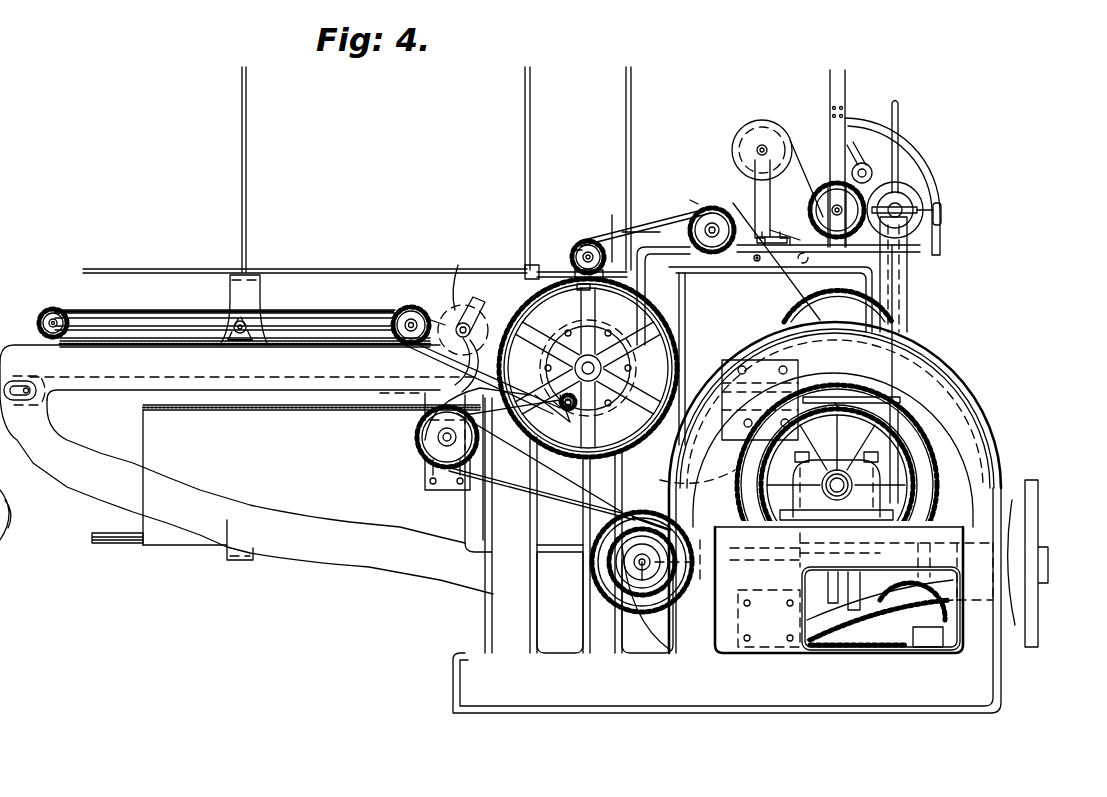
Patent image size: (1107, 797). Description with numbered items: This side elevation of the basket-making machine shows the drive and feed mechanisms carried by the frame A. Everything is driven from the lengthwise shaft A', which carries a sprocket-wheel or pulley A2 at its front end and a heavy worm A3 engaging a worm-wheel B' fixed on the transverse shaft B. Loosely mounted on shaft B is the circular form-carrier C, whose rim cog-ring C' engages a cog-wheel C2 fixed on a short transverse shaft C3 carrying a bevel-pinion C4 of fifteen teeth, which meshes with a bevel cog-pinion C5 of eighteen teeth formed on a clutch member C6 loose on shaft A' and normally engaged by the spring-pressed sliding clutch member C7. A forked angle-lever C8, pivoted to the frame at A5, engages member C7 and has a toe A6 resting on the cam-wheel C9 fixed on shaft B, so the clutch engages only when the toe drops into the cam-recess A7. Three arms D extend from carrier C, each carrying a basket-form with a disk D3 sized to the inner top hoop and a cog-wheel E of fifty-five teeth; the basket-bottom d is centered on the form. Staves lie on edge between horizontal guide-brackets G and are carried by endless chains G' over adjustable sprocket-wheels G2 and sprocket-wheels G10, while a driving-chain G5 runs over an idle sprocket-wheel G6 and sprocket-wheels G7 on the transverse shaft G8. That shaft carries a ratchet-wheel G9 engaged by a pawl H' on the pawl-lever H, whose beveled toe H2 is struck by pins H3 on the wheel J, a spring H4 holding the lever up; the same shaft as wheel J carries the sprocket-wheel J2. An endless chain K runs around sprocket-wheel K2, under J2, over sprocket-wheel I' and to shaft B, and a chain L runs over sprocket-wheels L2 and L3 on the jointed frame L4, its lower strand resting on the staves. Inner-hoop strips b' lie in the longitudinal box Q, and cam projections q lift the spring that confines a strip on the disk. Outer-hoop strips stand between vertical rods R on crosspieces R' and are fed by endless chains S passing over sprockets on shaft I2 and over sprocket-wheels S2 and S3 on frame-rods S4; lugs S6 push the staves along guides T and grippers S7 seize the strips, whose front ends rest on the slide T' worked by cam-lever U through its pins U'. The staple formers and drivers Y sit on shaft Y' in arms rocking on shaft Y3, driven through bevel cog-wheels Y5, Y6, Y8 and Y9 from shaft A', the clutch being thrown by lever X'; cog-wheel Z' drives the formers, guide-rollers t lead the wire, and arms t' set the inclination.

The vertical rods R is at (448, 169).
The crosspieces R' is at (355, 307).
The endless chain L is at (325, 310).
The sprocket-wheel L2 is at (238, 343).
The sprocket-wheel L3 is at (51, 308).
The jointed frame L4 is at (138, 318).
The horizontal guide-brackets G is at (240, 372).
The endless chains G' is at (311, 475).
The adjustable sprocket-wheels G2 is at (38, 388).
The endless driving-chain G5 is at (420, 367).
The idle sprocket-wheel G6 is at (411, 313).
The sprocket-wheels G7 is at (438, 305).
The transverse shaft G8 is at (472, 318).
The ratchet-wheel G9 is at (460, 262).
The sprocket-wheels G10 is at (559, 414).
The longitudinal box Q is at (246, 478).
The wooden strips b' is at (172, 535).
The pawl-lever H is at (541, 368).
The pawl H' is at (470, 333).
The beveled toe H2 is at (558, 471).
The pins H3 is at (602, 362).
The spring H4 is at (465, 388).
The endless chain K is at (617, 463).
The sprocket-wheel K2 is at (430, 462).
The wheel J is at (588, 368).
The sprocket-wheel J2 is at (603, 465).
The cam-lever U is at (576, 259).
The pins U' is at (576, 286).
The guides T is at (794, 285).
The slide T' is at (532, 261).
The endless chains S is at (643, 223).
The sprocket-wheel S2 is at (578, 236).
The sprocket-wheel S3 is at (787, 223).
The frame-rods S4 is at (614, 235).
The lugs S6 is at (682, 198).
The gripper S7 is at (642, 234).
The sprocket-wheel I' is at (712, 212).
The shaft I2 is at (663, 296).
The basket-bottom d is at (782, 121).
The cog-wheel Z' is at (778, 230).
The guide-rollers t is at (860, 162).
The arms t' is at (853, 158).
The lever X' is at (892, 184).
The staple formers and drivers Y is at (837, 217).
The shaft Y' is at (837, 207).
The shaft Y3 is at (900, 207).
The bevel cog-wheel Y5 is at (934, 227).
The bevel cog-wheel Y6 is at (915, 252).
The bevel cog-wheel Y8 is at (920, 543).
The bevel cog-wheel Y9 is at (912, 601).
The frame A is at (727, 554).
The shaft A' is at (1016, 571).
The sprocket-wheel A2 is at (1040, 488).
The worm A3 is at (850, 612).
The pivot A5 is at (747, 395).
The toe A6 is at (842, 397).
The cam-recess A7 is at (888, 430).
The shaft B is at (837, 485).
The worm-wheel B' is at (836, 475).
The circular form-carrier C is at (849, 608).
The cog-ring C' is at (857, 667).
The cog-wheel C2 is at (600, 560).
The short transverse shaft C3 is at (642, 573).
The bevel-pinion C4 is at (618, 580).
The bevel cog-pinion C5 is at (658, 597).
The clutch member C6 is at (682, 574).
The clutch member C7 is at (697, 500).
The forked angle-lever C8 is at (808, 395).
The cam-wheel C9 is at (925, 475).
The arms D is at (713, 322).
The disk D3 is at (762, 306).
The cog-wheel E is at (827, 427).
The cam projections q is at (928, 650).